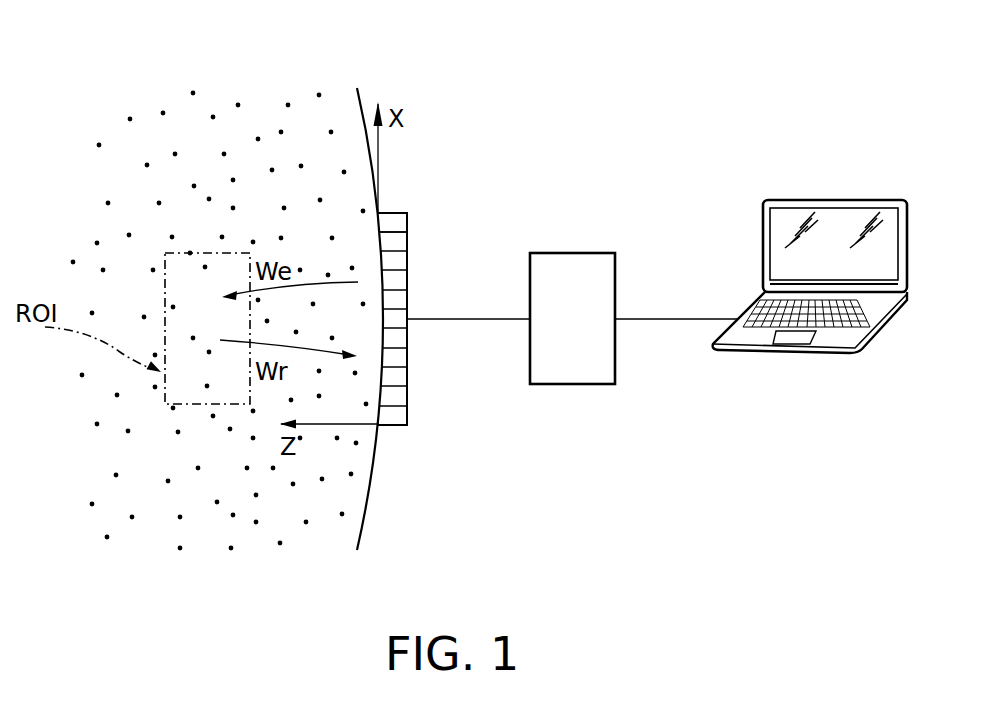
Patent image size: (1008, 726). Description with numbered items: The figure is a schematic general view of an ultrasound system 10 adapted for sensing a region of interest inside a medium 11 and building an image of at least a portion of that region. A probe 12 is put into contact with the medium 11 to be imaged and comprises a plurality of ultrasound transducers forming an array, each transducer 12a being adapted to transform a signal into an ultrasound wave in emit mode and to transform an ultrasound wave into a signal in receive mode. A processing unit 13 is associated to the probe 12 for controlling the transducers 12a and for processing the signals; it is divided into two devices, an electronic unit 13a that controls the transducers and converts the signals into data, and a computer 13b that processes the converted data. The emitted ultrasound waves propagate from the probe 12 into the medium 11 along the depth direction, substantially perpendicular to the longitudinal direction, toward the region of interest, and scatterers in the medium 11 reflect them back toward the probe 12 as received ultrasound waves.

The ultrasound system 10 is at (616, 136).
The medium 11 is at (350, 490).
The probe 12 is at (435, 317).
The transducer 12a is at (398, 225).
The processing unit 13 is at (718, 363).
The electronic unit 13a is at (594, 386).
The computer 13b is at (810, 311).